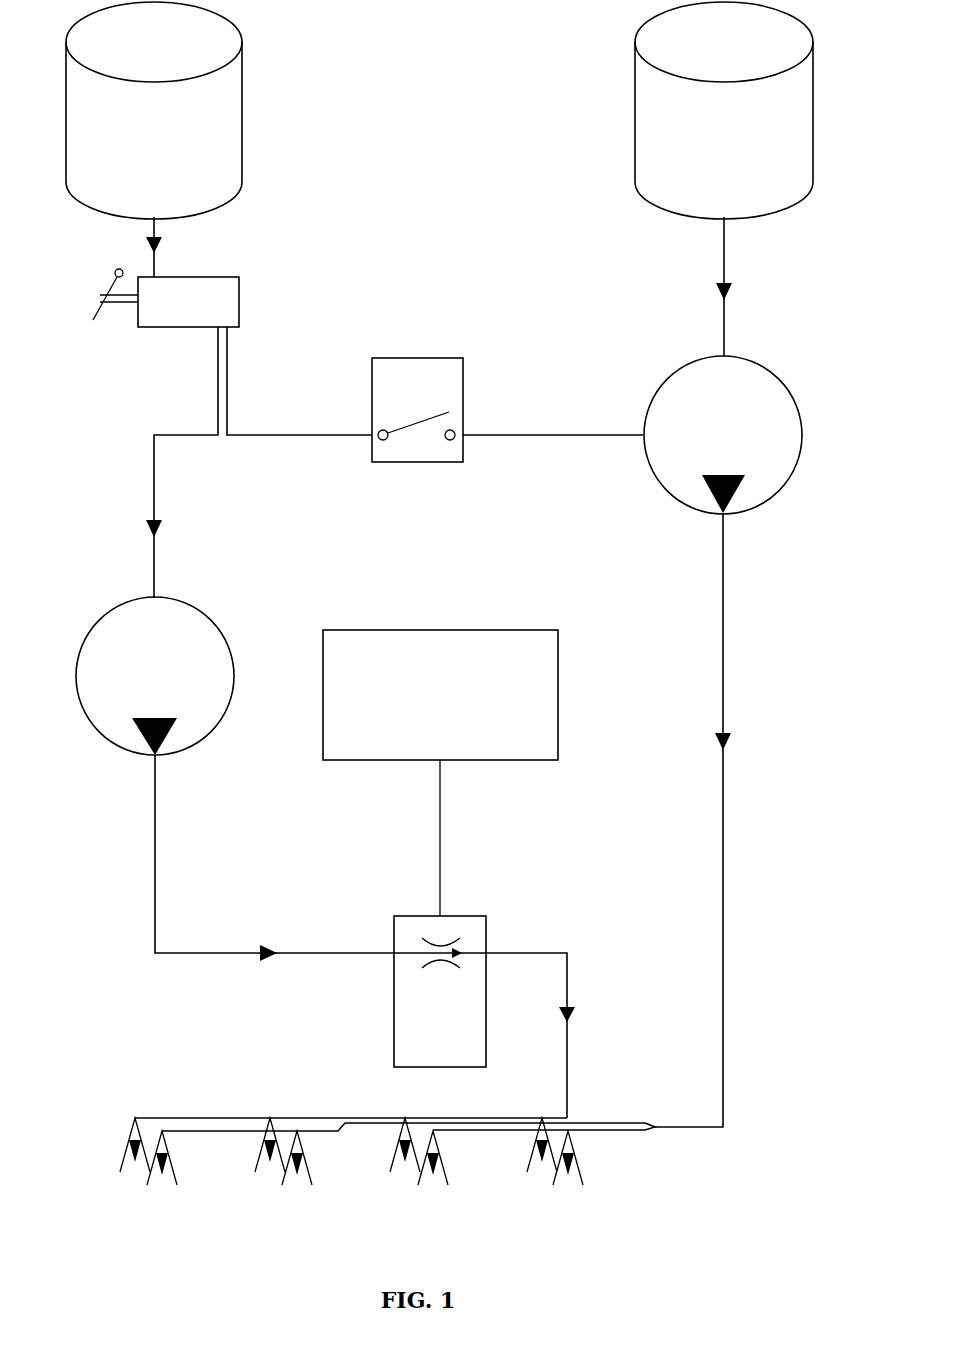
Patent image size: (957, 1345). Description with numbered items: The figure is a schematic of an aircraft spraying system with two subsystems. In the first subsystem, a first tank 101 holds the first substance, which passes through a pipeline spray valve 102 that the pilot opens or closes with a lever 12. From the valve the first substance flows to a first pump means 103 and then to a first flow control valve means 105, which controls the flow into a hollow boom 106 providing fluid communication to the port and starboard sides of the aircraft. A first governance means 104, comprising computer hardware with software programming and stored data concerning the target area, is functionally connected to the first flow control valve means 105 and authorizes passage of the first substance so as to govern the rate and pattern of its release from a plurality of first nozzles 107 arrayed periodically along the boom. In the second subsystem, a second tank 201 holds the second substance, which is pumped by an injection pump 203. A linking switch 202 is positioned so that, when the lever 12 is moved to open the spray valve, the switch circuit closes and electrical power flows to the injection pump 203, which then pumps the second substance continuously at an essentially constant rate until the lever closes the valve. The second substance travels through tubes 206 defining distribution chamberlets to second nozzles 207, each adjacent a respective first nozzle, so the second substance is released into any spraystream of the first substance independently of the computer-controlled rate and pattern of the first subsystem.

The first tank 101 is at (238, 100).
The second tank 201 is at (643, 100).
The pipeline spray valve 102 is at (239, 307).
The lever 12 is at (93, 318).
The linking switch 202 is at (416, 357).
The first pump means 103 is at (212, 627).
The injection pump 203 is at (660, 408).
The first governance means 104 is at (420, 643).
The first flow control valve means 105 is at (480, 930).
The hollow boom 106 is at (250, 1118).
The tubes 206 is at (608, 1130).
The first nozzles 107 is at (130, 1128).
The second nozzles 207 is at (172, 1163).